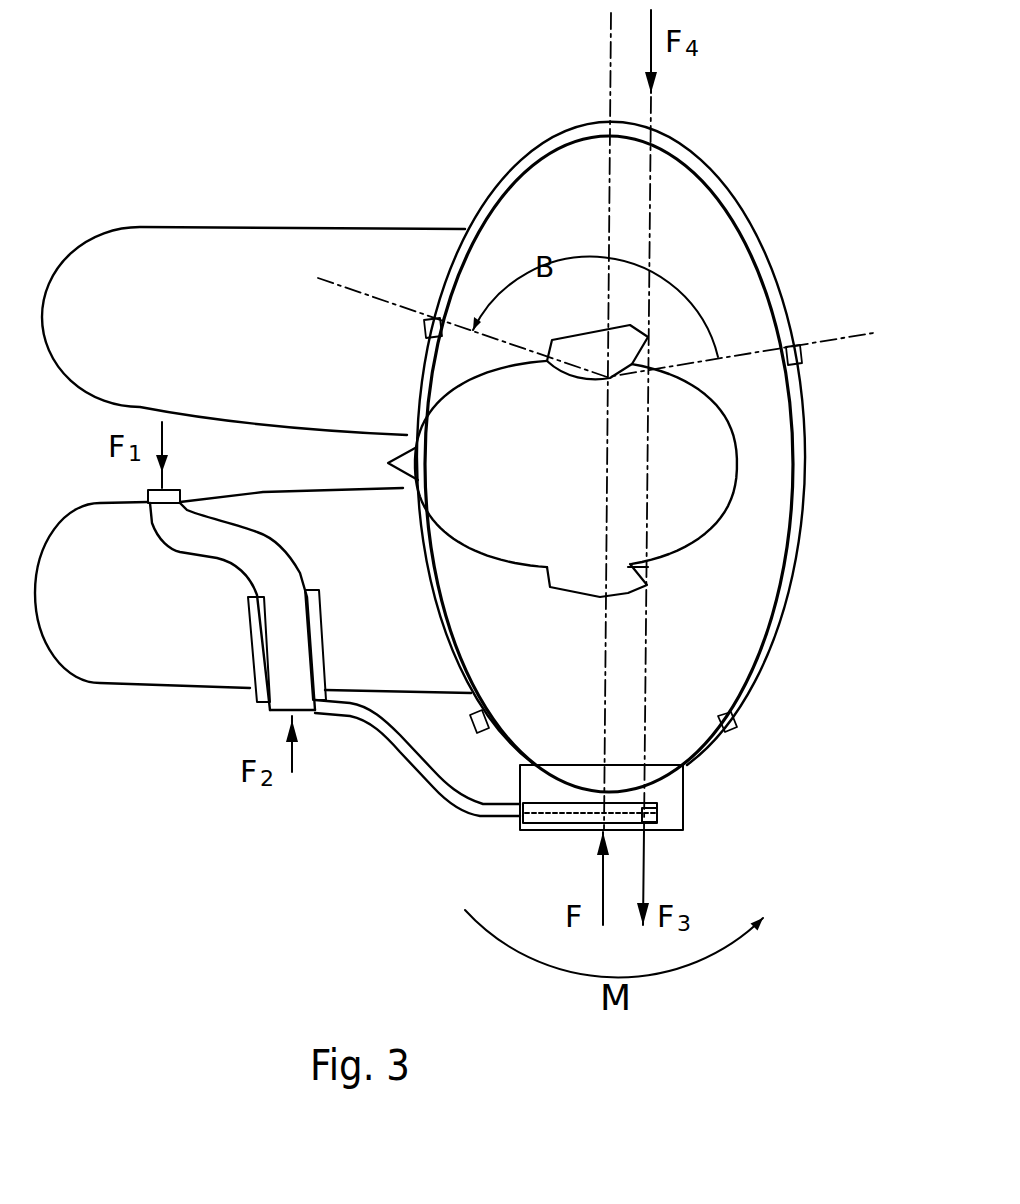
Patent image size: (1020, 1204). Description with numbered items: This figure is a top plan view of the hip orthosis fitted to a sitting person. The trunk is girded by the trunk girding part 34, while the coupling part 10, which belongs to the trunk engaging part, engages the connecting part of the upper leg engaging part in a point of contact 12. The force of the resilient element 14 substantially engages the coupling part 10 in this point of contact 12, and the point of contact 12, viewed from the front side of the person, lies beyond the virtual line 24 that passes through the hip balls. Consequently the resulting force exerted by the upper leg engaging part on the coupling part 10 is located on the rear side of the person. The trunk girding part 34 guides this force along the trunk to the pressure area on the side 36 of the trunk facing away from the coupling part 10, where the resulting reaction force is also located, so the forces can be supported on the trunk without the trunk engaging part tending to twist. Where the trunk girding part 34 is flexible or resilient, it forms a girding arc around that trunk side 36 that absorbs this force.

The coupling part 10 is at (683, 815).
The point of contact 12 is at (650, 823).
The resilient element 14 is at (407, 765).
The virtual line 24 is at (611, 35).
The trunk girding part 34 is at (803, 470).
The side of the trunk 36 is at (742, 205).